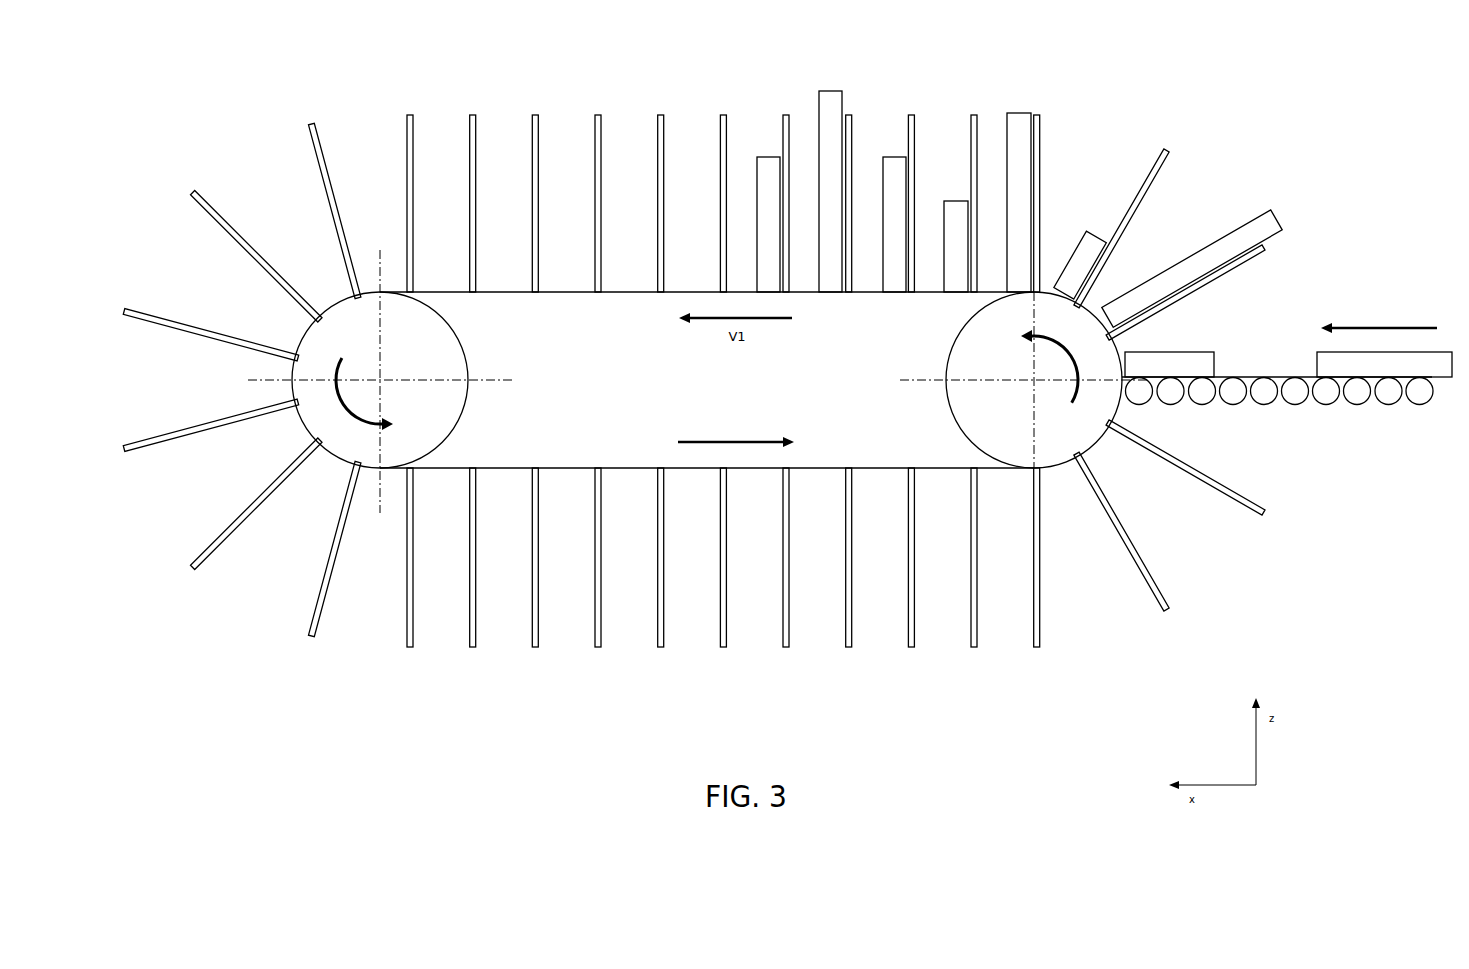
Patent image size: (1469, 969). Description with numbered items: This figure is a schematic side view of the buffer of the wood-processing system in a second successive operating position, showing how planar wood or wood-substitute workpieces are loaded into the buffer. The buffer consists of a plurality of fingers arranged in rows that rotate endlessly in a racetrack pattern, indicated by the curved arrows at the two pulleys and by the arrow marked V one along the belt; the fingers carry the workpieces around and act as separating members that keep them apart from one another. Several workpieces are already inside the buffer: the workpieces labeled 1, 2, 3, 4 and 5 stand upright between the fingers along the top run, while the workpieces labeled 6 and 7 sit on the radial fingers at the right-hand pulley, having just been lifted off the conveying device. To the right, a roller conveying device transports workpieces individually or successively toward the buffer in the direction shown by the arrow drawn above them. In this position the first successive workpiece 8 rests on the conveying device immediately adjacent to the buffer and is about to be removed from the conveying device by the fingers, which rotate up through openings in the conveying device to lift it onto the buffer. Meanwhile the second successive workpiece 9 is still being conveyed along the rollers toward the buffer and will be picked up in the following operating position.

The workpiece labeled 1 is at (768, 224).
The workpiece labeled 2 is at (830, 191).
The workpiece labeled 3 is at (894, 224).
The workpiece labeled 4 is at (956, 246).
The workpiece labeled 5 is at (1019, 202).
The workpiece labeled 6 is at (1080, 265).
The workpiece labeled 7 is at (1192, 268).
The first successive workpiece 8 is at (1169, 366).
The second successive workpiece 9 is at (1384, 366).